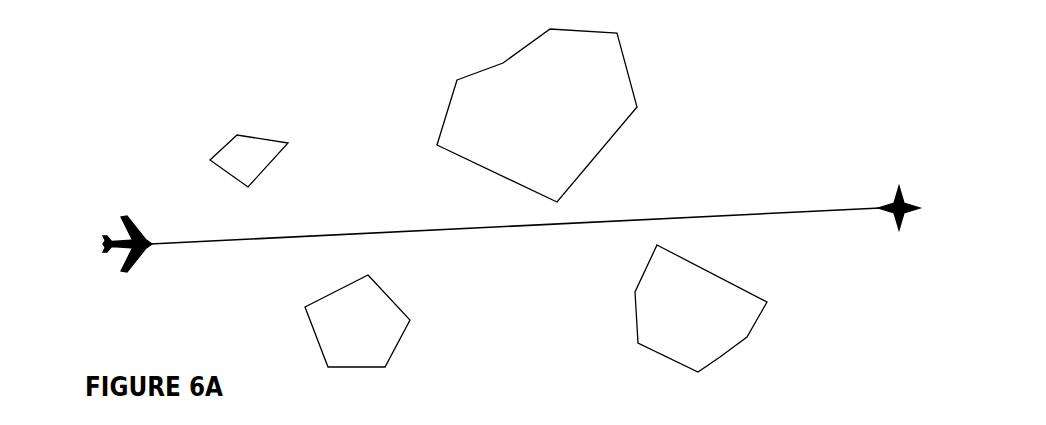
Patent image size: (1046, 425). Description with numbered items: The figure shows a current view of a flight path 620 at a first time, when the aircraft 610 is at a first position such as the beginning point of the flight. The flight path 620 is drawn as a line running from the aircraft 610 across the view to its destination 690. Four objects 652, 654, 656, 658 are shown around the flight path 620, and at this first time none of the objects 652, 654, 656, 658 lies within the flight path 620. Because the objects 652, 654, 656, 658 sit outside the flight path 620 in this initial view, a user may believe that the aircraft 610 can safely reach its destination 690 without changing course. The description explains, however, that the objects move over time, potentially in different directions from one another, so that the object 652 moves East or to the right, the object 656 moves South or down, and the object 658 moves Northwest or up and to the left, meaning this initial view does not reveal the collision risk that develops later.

The aircraft 610 is at (108, 233).
The flight path 620 is at (580, 215).
The object 652 is at (245, 133).
The object 654 is at (390, 295).
The object 656 is at (478, 97).
The object 658 is at (772, 300).
The destination 690 is at (907, 200).